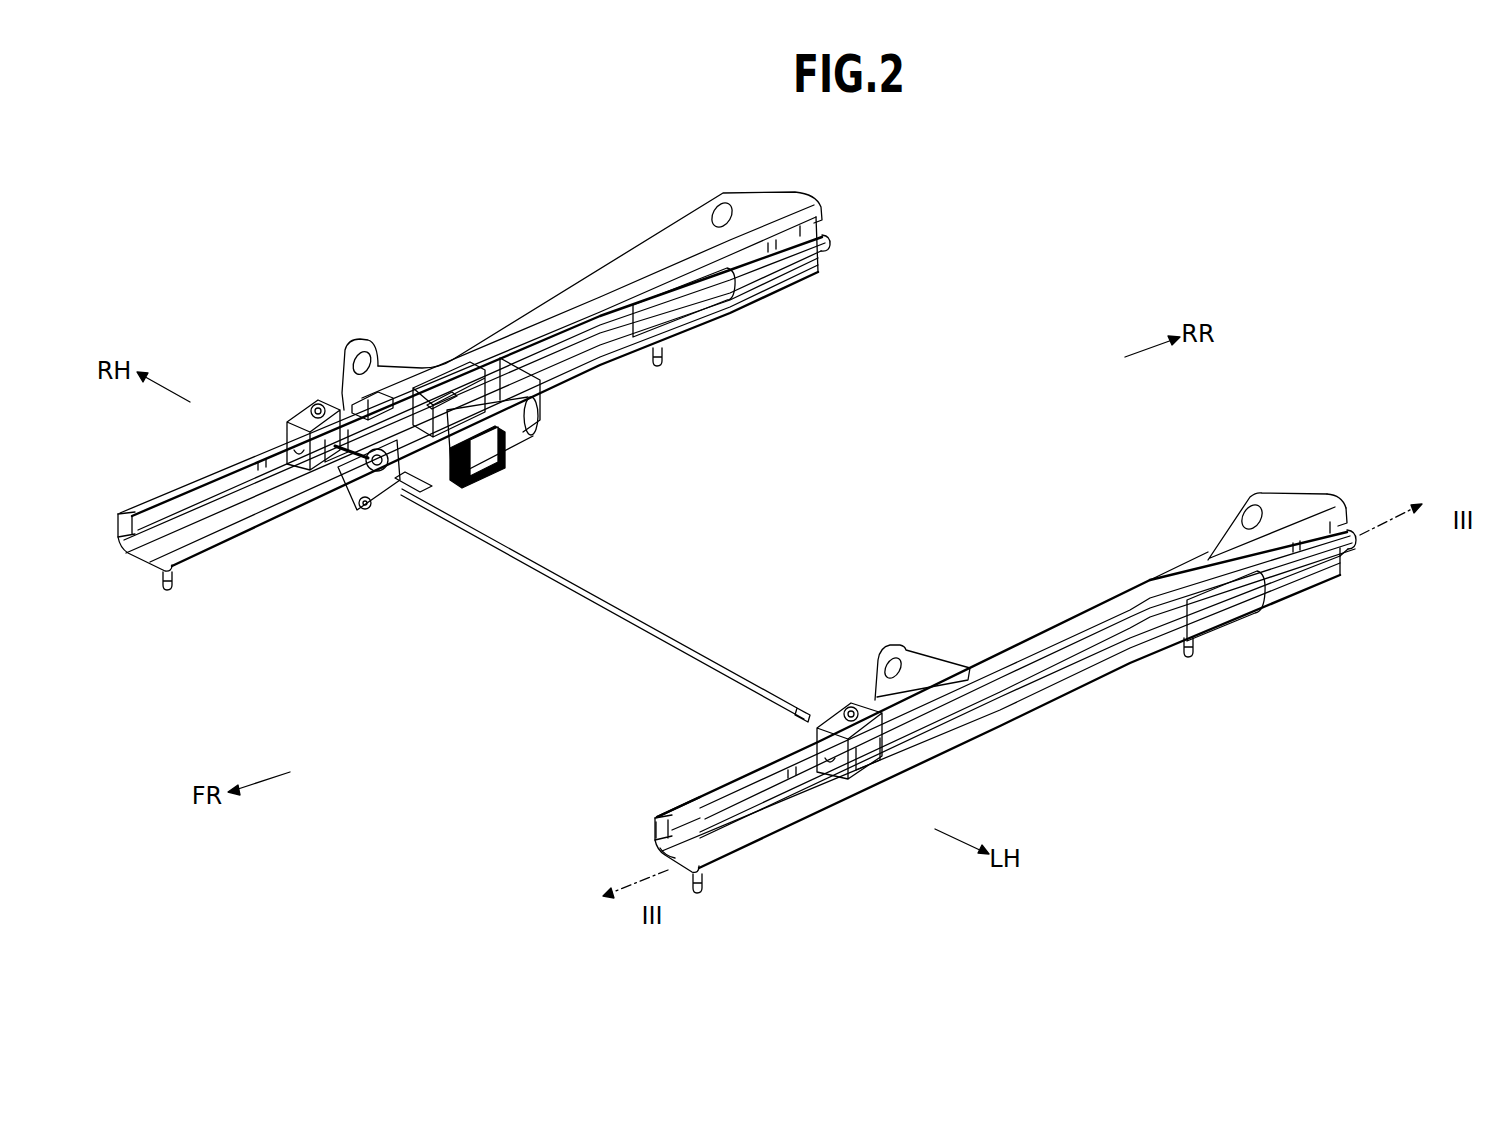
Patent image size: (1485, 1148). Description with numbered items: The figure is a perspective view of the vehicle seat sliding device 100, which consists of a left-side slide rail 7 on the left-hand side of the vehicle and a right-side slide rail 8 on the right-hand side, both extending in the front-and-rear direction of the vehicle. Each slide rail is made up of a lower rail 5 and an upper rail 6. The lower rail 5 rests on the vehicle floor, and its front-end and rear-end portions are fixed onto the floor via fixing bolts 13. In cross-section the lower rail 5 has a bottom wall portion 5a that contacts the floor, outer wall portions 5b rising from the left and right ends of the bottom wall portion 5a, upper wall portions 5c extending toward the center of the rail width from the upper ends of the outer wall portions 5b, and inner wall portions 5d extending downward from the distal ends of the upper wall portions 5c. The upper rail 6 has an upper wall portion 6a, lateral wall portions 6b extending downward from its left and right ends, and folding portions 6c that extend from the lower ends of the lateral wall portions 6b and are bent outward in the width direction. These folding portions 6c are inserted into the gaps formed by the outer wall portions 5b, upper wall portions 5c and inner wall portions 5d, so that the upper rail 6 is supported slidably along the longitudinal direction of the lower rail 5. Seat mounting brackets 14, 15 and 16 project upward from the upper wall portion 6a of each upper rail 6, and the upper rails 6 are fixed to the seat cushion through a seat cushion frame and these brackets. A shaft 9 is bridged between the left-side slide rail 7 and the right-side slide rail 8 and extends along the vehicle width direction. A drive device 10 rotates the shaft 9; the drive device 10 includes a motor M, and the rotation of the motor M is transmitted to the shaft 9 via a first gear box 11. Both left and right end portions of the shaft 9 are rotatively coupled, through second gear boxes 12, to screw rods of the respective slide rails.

The vehicle seat sliding device 100 is at (453, 268).
The lower rail 5 is at (208, 560).
The bottom wall portion 5a is at (662, 857).
The outer wall portion 5b is at (652, 828).
The upper wall portion 5c is at (670, 808).
The inner wall portion 5d is at (693, 820).
The upper rail 6 is at (795, 255).
The upper wall portion 6a is at (1337, 497).
The lateral wall portion 6b is at (1358, 517).
The folding portion 6c is at (1341, 566).
The left-side slide rail 7 is at (1087, 599).
The right-side slide rail 8 is at (766, 181).
The shaft 9 is at (638, 612).
The drive device 10 is at (546, 414).
The first gear box 11 is at (400, 497).
The second gear box 12 is at (308, 405).
The fixing bolt 13 is at (167, 593).
The seat mounting bracket 14 is at (932, 662).
The seat mounting bracket 15 is at (1287, 510).
The seat mounting bracket 16 is at (622, 272).
The motor M is at (514, 440).